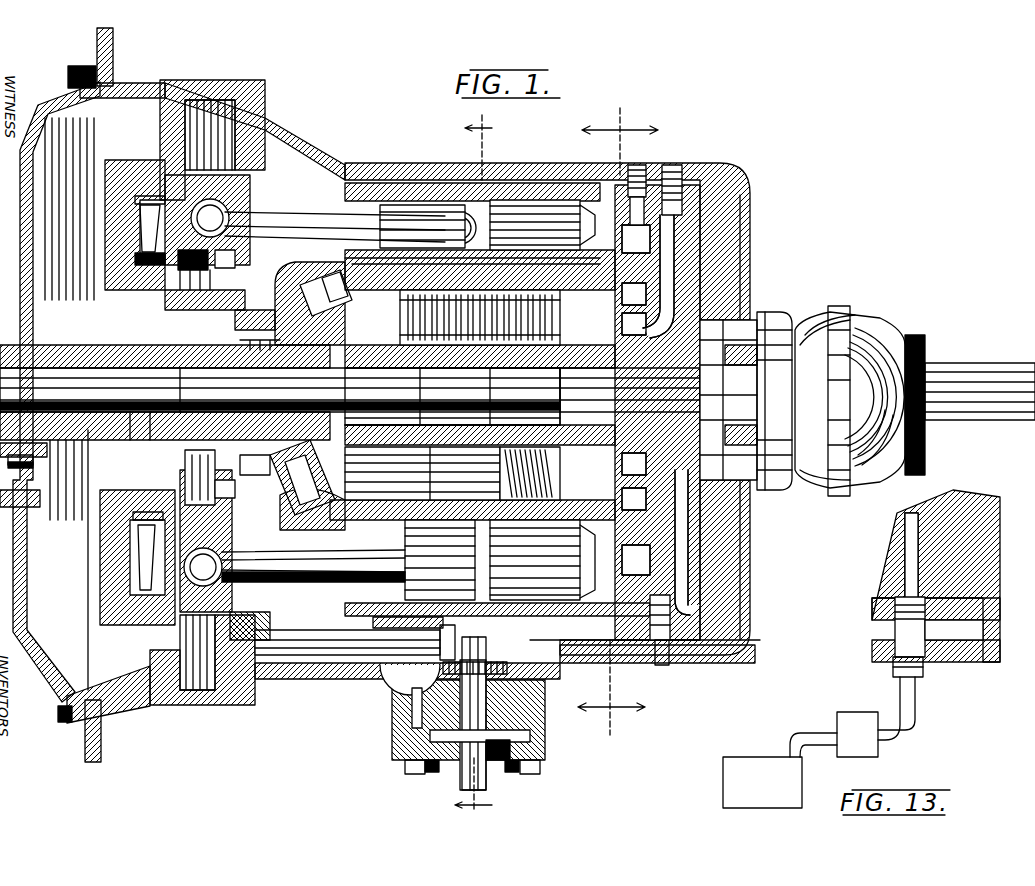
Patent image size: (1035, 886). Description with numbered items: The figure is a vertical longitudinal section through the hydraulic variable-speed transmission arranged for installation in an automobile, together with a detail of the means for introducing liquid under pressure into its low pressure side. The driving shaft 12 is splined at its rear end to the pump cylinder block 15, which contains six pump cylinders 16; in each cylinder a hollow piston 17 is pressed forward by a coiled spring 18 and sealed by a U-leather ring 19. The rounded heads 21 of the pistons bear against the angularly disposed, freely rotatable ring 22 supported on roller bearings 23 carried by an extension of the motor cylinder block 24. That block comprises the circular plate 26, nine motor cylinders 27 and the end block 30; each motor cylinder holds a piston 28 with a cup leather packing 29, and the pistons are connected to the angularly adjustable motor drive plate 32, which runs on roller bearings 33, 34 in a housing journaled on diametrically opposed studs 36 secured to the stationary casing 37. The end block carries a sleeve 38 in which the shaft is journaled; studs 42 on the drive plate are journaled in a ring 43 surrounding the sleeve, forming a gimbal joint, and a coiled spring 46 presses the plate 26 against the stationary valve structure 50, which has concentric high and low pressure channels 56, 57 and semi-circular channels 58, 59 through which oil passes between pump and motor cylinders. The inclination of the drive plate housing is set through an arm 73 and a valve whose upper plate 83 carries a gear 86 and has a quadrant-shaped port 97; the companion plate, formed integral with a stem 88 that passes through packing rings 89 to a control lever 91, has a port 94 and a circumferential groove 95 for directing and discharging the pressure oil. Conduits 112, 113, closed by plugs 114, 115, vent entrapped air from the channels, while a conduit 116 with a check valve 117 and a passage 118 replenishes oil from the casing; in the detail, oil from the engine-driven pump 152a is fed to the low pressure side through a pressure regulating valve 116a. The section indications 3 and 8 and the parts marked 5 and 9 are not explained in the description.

In FIG. 1, the section line 3 is at (618, 416).
In FIG. 1, the housing 5 is at (100, 222).
In FIG. 1, the section line 8 is at (478, 460).
In FIG. 1, the bottom plate 9 is at (507, 658).
In FIG. 1, the driving shaft 12 is at (350, 390).
In FIG. 1, the pump cylinder block 15 is at (420, 405).
In FIG. 1, the pump cylinders 16 is at (522, 430).
In FIG. 1, the hollow piston 17 is at (505, 300).
In FIG. 1, the coiled spring 18 is at (545, 300).
In FIG. 1, the U-leather ring 19 is at (490, 300).
In FIG. 1, the rounded heads 21 is at (330, 528).
In FIG. 1, the freely rotatable ring 22 is at (300, 505).
In FIG. 1, the roller bearings 23 is at (238, 498).
In FIG. 1, the motor cylinder block 24 is at (298, 292).
In FIG. 1, the circular plate 26 is at (740, 263).
In FIG. 1, the motor cylinders 27 is at (540, 195).
In FIG. 1, the motor piston 28 is at (458, 210).
In FIG. 1, the cup leather packing 29 is at (472, 215).
In FIG. 1, the end block 30 is at (278, 293).
In FIG. 1, the motor drive plate 32 is at (240, 195).
In FIG. 1, the roller bearing 33 is at (150, 210).
In FIG. 1, the roller bearing 34 is at (170, 300).
In FIG. 1, the studs 36 is at (215, 130).
In FIG. 1, the stationary casing 37 is at (300, 153).
In FIG. 1, the sleeve 38 is at (118, 440).
In FIG. 1, the studs 42 is at (240, 262).
In FIG. 1, the ring 43 is at (228, 302).
In FIG. 1, the coiled spring 46 is at (254, 463).
In FIG. 1, the stationary valve structure 50 is at (740, 232).
In FIG. 13, the stationary valve structure 50 is at (890, 548).
In FIG. 1, the high pressure channel 56 is at (634, 396).
In FIG. 1, the low pressure channel 57 is at (634, 394).
In FIG. 1, the semi-circular channel 58 is at (636, 239).
In FIG. 1, the semi-circular channel 59 is at (636, 560).
In FIG. 1, the arm 73 is at (300, 632).
In FIG. 1, the valve plate 83 is at (402, 708).
In FIG. 1, the gear 86 is at (492, 660).
In FIG. 1, the stem 88 is at (462, 770).
In FIG. 1, the packing rings 89 is at (500, 760).
In FIG. 1, the control lever 91 is at (118, 628).
In FIG. 1, the port 94 is at (440, 742).
In FIG. 1, the circumferential groove 95 is at (535, 738).
In FIG. 13, the quadrant shaped port 97 is at (948, 672).
In FIG. 1, the conduit 112 is at (640, 200).
In FIG. 1, the conduit 113 is at (700, 188).
In FIG. 1, the plug 114 is at (636, 165).
In FIG. 1, the plug 115 is at (675, 170).
In FIG. 1, the conduit 116 is at (692, 549).
In FIG. 13, the conduit 116 is at (908, 573).
In FIG. 13, the pressure regulating valve 116a is at (860, 712).
In FIG. 1, the check valve 117 is at (672, 620).
In FIG. 13, the check valve 117 is at (900, 618).
In FIG. 1, the passage 118 is at (705, 655).
In FIG. 13, the passage 118 is at (880, 633).
In FIG. 13, the oil pump 152a is at (802, 772).